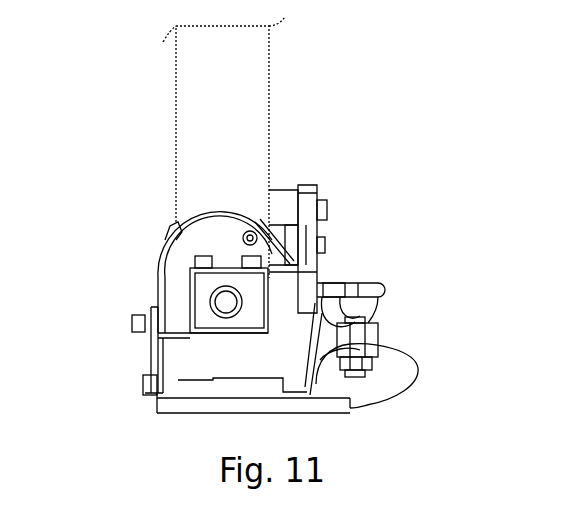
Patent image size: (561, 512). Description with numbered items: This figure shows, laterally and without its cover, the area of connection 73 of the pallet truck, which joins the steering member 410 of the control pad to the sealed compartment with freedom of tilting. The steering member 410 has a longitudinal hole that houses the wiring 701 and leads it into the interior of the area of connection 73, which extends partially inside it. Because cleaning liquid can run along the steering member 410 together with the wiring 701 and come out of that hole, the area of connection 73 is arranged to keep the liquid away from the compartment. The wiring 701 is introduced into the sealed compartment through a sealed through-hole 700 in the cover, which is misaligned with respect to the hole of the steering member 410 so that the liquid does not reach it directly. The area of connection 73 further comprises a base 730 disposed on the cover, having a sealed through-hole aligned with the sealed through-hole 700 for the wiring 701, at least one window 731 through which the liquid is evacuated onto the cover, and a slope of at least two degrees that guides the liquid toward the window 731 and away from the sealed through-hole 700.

The steering member 410 is at (205, 163).
The area of connection 73 is at (117, 265).
The window 731 is at (205, 388).
The wiring 701 is at (377, 283).
The base 730 is at (395, 360).
The sealed through-hole 700 is at (362, 375).